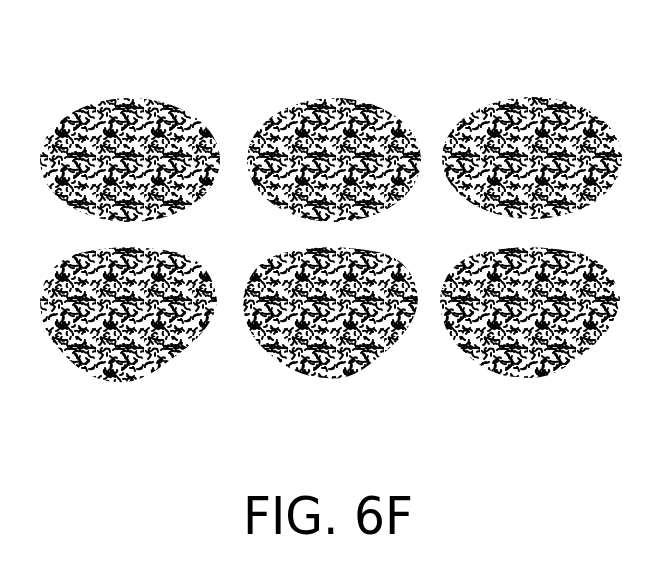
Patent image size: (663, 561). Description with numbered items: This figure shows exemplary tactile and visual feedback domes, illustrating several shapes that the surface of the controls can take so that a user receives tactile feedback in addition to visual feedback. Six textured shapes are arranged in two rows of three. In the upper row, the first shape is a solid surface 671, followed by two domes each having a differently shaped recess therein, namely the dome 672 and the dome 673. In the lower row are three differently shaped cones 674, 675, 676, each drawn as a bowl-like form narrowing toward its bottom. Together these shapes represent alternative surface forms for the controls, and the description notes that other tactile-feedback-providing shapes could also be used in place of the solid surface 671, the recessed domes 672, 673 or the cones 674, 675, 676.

The solid surface 671 is at (137, 100).
The dome with recess 672 is at (357, 106).
The dome with differently shaped recess 673 is at (553, 106).
The cone 674 is at (113, 383).
The cone 675 is at (322, 380).
The cone 676 is at (523, 380).